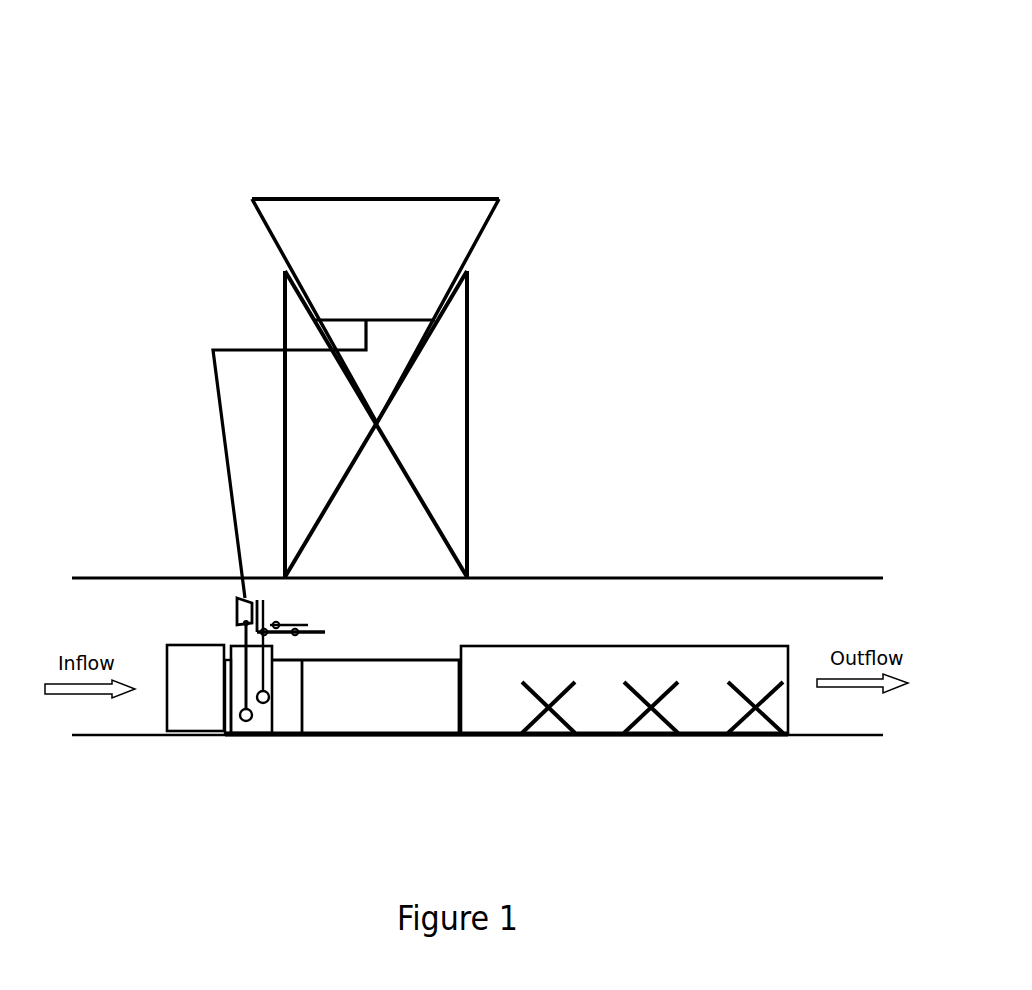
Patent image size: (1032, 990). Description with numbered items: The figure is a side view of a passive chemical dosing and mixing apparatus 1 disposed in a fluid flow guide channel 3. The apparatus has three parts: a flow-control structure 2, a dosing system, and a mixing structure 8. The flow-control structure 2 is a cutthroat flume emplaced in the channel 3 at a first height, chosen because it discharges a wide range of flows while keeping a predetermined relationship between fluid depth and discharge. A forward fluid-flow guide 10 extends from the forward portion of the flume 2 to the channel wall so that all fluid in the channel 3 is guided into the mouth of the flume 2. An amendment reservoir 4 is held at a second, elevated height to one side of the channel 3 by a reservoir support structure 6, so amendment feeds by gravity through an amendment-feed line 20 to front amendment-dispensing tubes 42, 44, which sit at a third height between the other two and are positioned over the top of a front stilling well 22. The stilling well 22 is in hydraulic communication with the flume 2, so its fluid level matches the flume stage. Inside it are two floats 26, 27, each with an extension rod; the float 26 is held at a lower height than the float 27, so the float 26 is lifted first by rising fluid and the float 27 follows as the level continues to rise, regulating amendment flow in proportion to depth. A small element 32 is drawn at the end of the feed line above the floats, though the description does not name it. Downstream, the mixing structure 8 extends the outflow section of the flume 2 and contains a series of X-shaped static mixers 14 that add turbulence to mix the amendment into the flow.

The passive chemical dosing and mixing apparatus 1 is at (707, 162).
The flow-control structure 2 is at (390, 682).
The fluid flow guide channel 3 is at (723, 575).
The amendment reservoir 4 is at (352, 190).
The reservoir support structure 6 is at (467, 363).
The mixing structure 8 is at (728, 633).
The forward fluid-flow guide 10 is at (185, 705).
The static mixers 14 is at (753, 722).
The amendment-feed line 20 is at (227, 342).
The front stilling well 22 is at (272, 722).
The float 26 is at (242, 722).
The float 27 is at (263, 712).
The valve body 32 is at (232, 603).
The front amendment-dispensing tube 42 is at (327, 623).
The front amendment-dispensing tube 44 is at (286, 615).